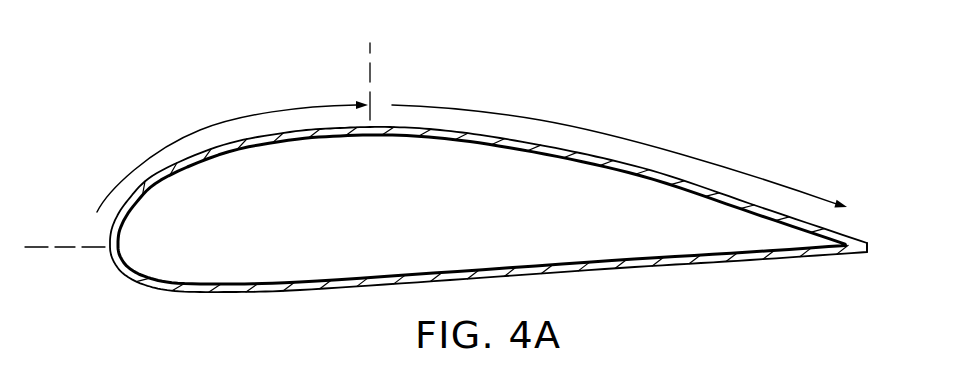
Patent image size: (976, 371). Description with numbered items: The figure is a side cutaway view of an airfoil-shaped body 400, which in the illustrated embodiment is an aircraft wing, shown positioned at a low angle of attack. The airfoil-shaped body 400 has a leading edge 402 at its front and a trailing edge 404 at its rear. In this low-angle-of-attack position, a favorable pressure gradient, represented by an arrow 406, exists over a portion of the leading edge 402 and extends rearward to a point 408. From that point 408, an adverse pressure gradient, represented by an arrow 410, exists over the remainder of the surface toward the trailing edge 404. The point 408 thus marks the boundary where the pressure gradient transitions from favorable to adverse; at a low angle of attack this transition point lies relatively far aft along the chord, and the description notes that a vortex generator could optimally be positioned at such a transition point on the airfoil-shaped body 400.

The airfoil-shaped body 400 is at (722, 271).
The leading edge 402 is at (110, 252).
The trailing edge 404 is at (868, 248).
The arrow 406 is at (240, 121).
The point 408 is at (369, 50).
The arrow 410 is at (610, 137).